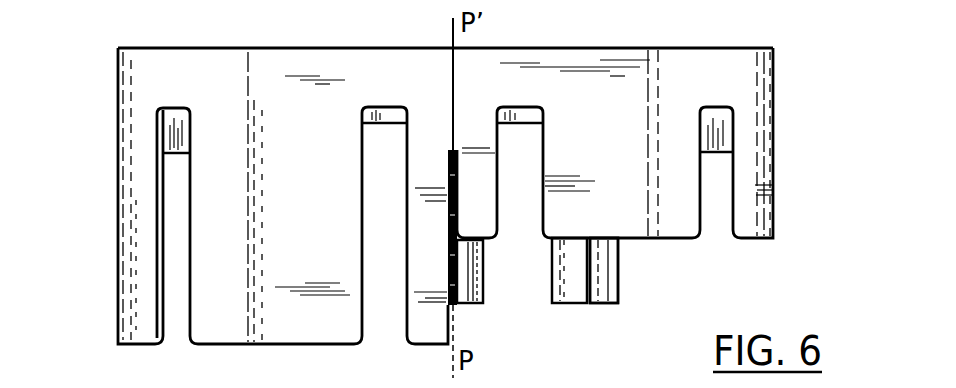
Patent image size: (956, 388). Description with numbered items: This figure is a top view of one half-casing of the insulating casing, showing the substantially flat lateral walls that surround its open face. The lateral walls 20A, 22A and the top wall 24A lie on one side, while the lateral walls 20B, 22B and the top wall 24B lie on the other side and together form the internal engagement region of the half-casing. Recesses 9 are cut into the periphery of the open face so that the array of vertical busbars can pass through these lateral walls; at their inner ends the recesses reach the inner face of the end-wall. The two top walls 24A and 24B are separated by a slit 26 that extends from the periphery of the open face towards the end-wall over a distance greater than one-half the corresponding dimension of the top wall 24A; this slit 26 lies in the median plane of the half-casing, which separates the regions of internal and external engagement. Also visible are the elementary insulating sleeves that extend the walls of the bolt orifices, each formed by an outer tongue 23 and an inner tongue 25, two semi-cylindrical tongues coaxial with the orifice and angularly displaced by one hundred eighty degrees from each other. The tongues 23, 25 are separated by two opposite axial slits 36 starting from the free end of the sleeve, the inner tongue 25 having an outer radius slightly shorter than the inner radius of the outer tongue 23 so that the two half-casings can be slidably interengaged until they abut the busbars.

The recesses 9 is at (177, 312).
The lateral wall 20A is at (119, 270).
The lateral wall 20B is at (775, 197).
The lateral wall 22A is at (134, 212).
The lateral wall 22B is at (755, 159).
The outer tongue 23 is at (568, 288).
The top wall 24A is at (332, 218).
The top wall 24B is at (623, 164).
The inner tongue 25 is at (608, 278).
The slit 26 is at (458, 192).
The axial slits 36 is at (453, 306).